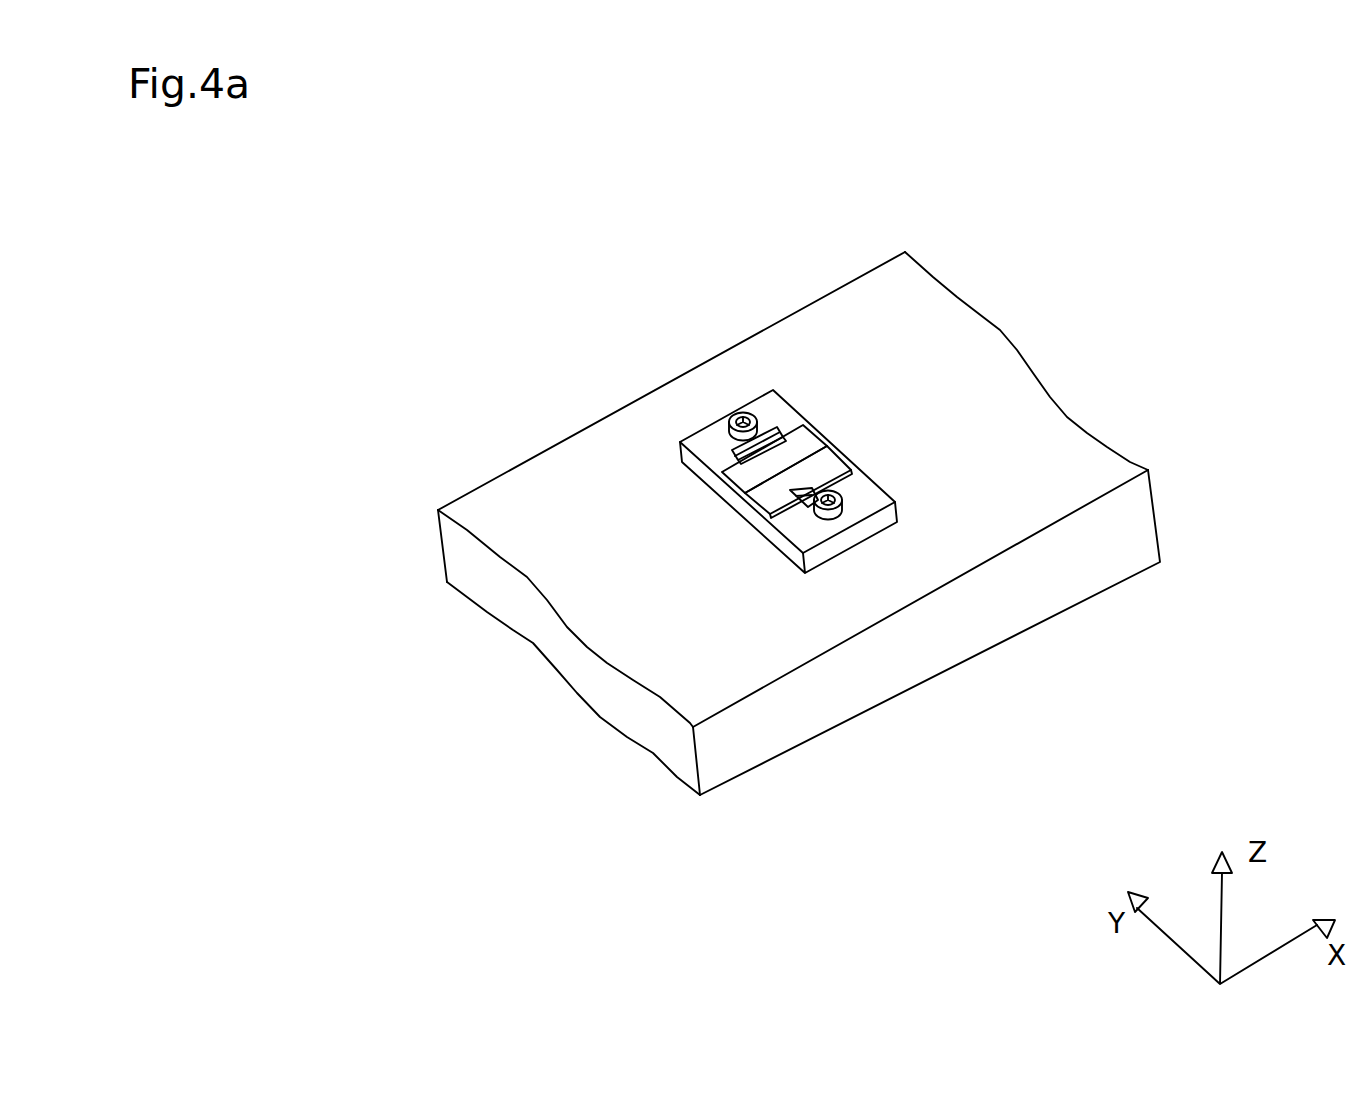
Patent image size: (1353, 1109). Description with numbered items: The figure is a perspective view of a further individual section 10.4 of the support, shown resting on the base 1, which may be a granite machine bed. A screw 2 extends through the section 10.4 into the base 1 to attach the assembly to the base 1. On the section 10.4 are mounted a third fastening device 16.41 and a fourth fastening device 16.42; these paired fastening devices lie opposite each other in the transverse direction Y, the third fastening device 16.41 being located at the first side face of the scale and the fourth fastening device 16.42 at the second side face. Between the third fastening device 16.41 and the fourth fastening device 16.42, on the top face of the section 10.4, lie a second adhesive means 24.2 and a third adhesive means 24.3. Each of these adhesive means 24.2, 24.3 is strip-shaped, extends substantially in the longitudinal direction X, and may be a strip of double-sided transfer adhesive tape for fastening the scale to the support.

The base 1 is at (720, 523).
The screw 2 is at (725, 410).
The section of the support 10.4 is at (900, 564).
The third fastening device 16.41 is at (800, 703).
The fourth fastening device 16.42 is at (761, 318).
The second adhesive means 24.2 is at (697, 673).
The third adhesive means 24.3 is at (572, 611).